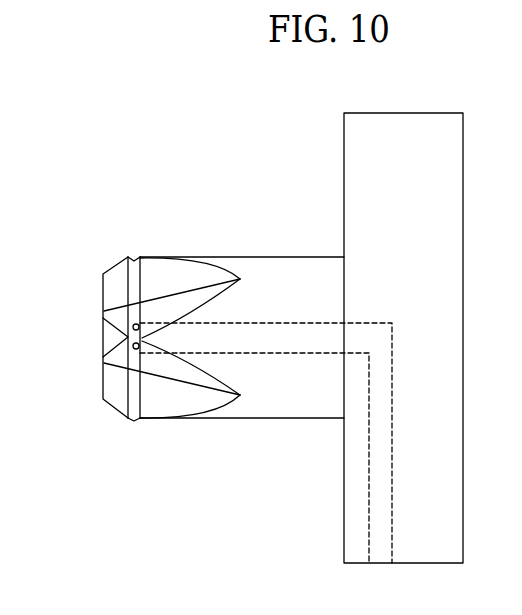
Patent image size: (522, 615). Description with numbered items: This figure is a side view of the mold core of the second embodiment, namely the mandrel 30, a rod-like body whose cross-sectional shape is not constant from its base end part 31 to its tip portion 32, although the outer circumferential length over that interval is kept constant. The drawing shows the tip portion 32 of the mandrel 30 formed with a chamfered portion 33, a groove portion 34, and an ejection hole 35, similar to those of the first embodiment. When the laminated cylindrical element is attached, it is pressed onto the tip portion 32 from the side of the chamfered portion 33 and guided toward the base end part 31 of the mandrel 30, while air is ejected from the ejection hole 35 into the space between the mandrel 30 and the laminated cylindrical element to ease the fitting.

The mandrel 30 is at (242, 207).
The base end part 31 is at (344, 257).
The tip portion 32 is at (132, 430).
The chamfered portion 33 is at (112, 268).
The groove portion 34 is at (133, 258).
The ejection hole 35 is at (139, 327).